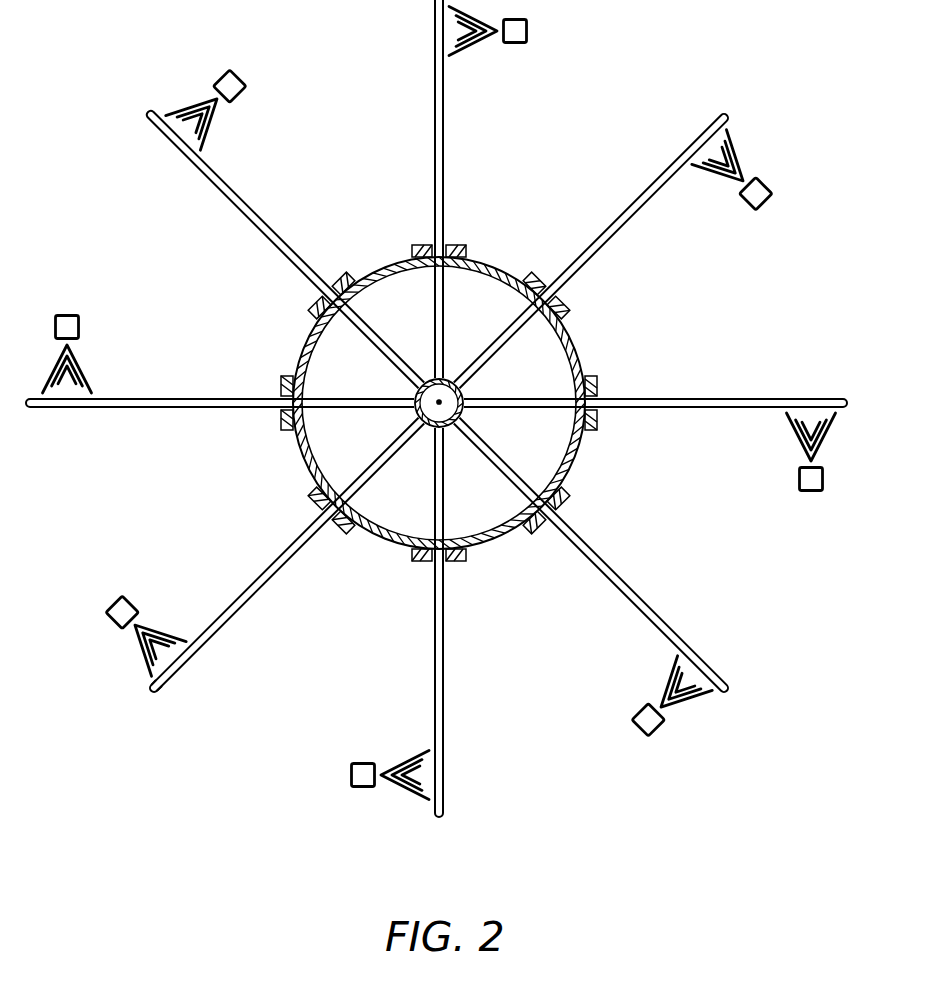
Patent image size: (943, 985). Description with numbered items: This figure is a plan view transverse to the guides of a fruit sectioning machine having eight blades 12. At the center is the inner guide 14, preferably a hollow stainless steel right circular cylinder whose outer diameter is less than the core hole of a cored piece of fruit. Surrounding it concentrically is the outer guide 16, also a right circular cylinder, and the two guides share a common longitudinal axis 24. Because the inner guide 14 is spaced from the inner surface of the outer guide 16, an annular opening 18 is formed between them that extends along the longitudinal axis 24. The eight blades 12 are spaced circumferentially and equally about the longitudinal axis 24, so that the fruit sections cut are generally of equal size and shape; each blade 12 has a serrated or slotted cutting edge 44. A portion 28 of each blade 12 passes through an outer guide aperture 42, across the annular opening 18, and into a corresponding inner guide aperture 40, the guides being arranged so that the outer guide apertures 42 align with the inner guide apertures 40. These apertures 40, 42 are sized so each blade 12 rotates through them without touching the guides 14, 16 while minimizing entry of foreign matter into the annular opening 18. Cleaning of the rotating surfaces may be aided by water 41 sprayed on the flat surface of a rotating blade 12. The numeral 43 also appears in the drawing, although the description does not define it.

The blade 12 is at (200, 655).
The inner guide 14 is at (466, 394).
The outer guide 16 is at (384, 548).
The annular opening 18 is at (340, 447).
The longitudinal axis 24 is at (444, 412).
The portion of blade 28 is at (492, 334).
The inner guide aperture 40 is at (436, 380).
The water 41 is at (203, 88).
The outer guide aperture 42 is at (541, 333).
The mounting block 43 is at (542, 524).
The cutting edge 44 is at (157, 692).